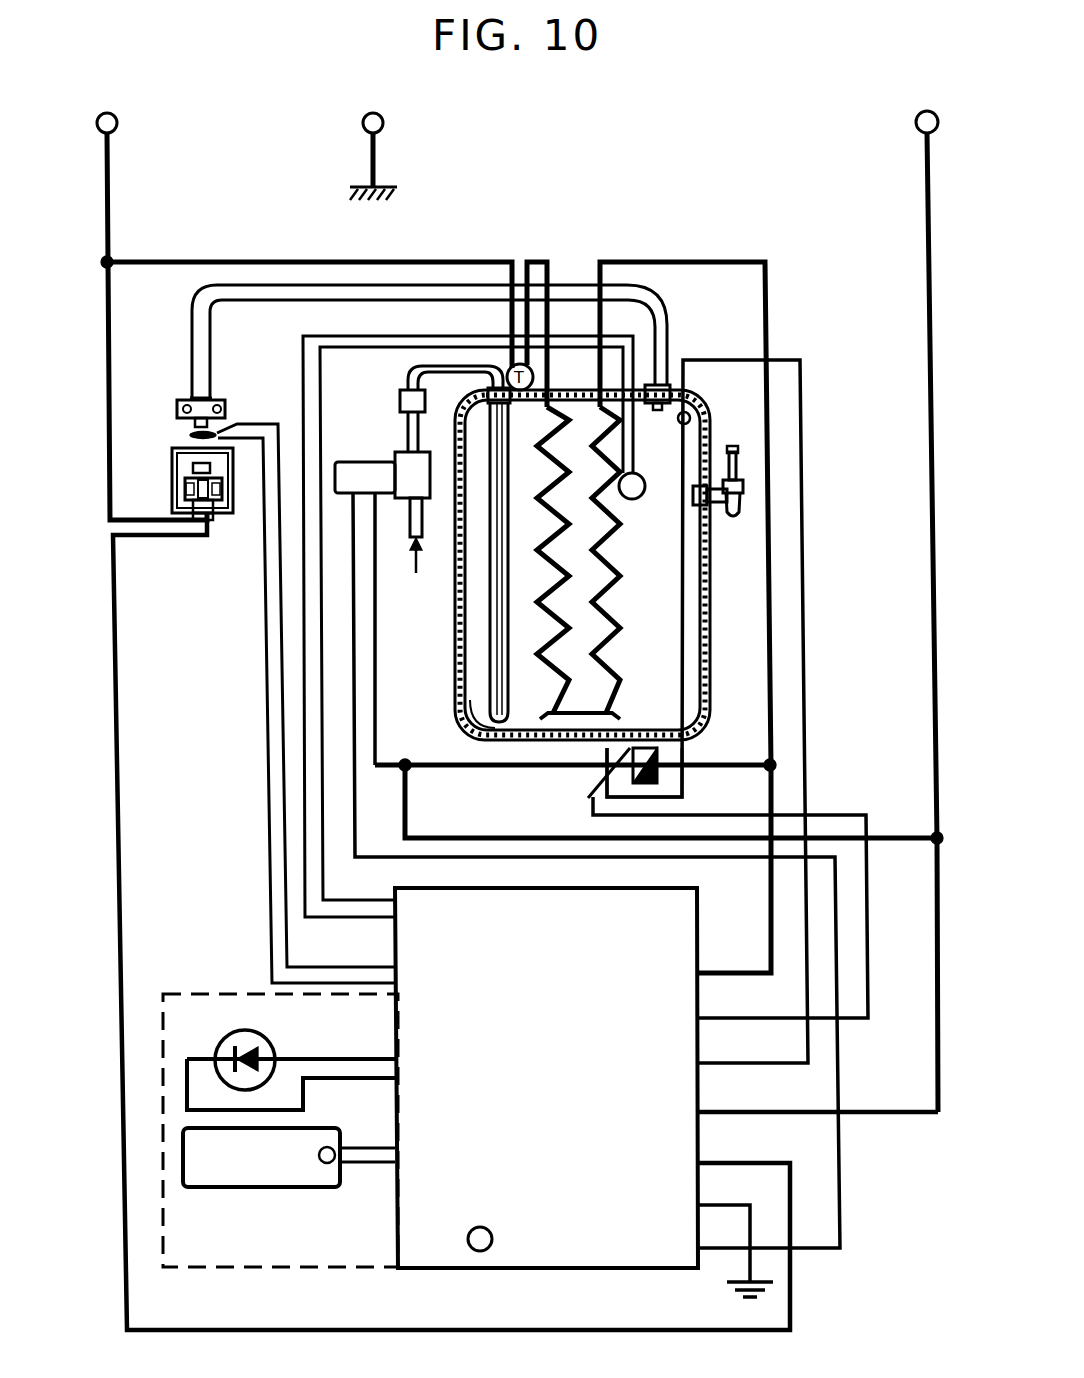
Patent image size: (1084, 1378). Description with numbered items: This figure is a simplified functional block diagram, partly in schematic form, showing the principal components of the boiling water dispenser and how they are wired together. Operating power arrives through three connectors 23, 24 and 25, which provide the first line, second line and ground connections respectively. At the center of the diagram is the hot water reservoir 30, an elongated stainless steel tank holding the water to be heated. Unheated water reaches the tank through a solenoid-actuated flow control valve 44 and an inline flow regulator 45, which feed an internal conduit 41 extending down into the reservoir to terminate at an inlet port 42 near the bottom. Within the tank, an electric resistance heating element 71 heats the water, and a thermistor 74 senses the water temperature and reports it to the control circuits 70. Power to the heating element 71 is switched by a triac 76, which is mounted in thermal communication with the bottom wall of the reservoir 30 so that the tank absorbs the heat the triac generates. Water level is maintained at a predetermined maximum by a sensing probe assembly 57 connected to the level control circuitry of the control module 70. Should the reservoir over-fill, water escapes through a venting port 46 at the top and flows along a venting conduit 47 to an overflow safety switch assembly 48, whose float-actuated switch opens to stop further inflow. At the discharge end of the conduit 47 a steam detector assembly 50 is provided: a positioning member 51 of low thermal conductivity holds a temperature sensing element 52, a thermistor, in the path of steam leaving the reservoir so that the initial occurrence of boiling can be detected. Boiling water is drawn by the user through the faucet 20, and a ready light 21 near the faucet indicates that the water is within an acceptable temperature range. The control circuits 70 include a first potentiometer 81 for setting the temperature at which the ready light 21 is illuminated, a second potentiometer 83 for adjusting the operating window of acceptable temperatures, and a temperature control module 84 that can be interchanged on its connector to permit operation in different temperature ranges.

The faucet 20 is at (740, 500).
The ready light 21 is at (263, 1046).
The connector 23 is at (117, 128).
The connector 24 is at (918, 128).
The connector 25 is at (383, 130).
The hot water reservoir 30 is at (706, 442).
The internal conduit 41 is at (505, 662).
The inlet port 42 is at (465, 708).
The solenoid-actuated flow control valve 44 is at (402, 457).
The inline flow regulator 45 is at (398, 392).
The venting port 46 is at (658, 413).
The venting conduit 47 is at (202, 345).
The overflow safety switch assembly 48 is at (165, 475).
The steam detector assembly 50 is at (170, 408).
The positioning member 51 is at (183, 398).
The temperature sensing element 52 is at (188, 435).
The sensing probe assembly 57 is at (693, 397).
The control module 70 is at (698, 902).
The electric resistance heating element 71 is at (620, 648).
The thermistor 74 is at (645, 483).
The triac 76 is at (683, 782).
The first potentiometer 81 is at (333, 1162).
The second potentiometer 83 is at (480, 1251).
The temperature control module 84 is at (263, 1188).